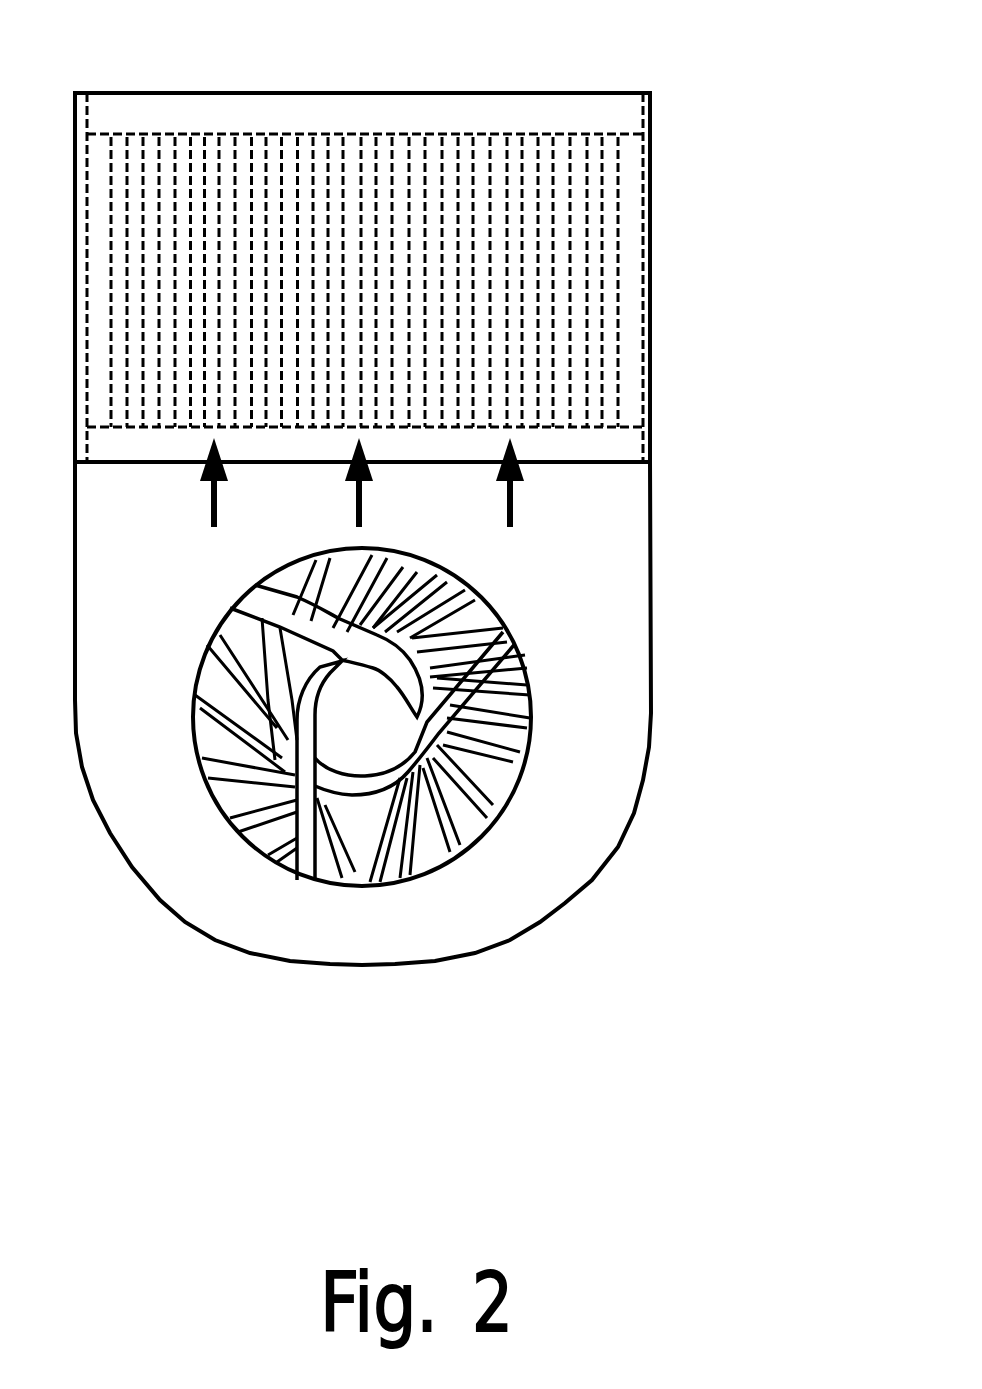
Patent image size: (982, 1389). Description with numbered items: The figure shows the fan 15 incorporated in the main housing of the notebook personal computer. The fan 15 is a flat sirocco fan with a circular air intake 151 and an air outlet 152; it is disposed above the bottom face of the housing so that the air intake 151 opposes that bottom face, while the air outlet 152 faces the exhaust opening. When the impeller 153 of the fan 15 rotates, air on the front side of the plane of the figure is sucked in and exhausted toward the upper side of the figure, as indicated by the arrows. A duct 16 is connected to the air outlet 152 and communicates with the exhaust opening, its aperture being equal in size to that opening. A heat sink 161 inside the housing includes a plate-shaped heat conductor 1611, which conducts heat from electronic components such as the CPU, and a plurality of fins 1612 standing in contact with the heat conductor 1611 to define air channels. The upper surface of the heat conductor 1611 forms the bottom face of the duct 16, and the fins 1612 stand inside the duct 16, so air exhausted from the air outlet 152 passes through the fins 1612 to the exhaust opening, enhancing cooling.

The fan 15 is at (703, 487).
The air intake 151 is at (432, 870).
The air outlet 152 is at (618, 462).
The impeller 153 is at (497, 790).
The duct 16 is at (676, 112).
The heat sink 161 is at (666, 181).
The heat conductor 1611 is at (627, 297).
The fins 1612 is at (617, 143).